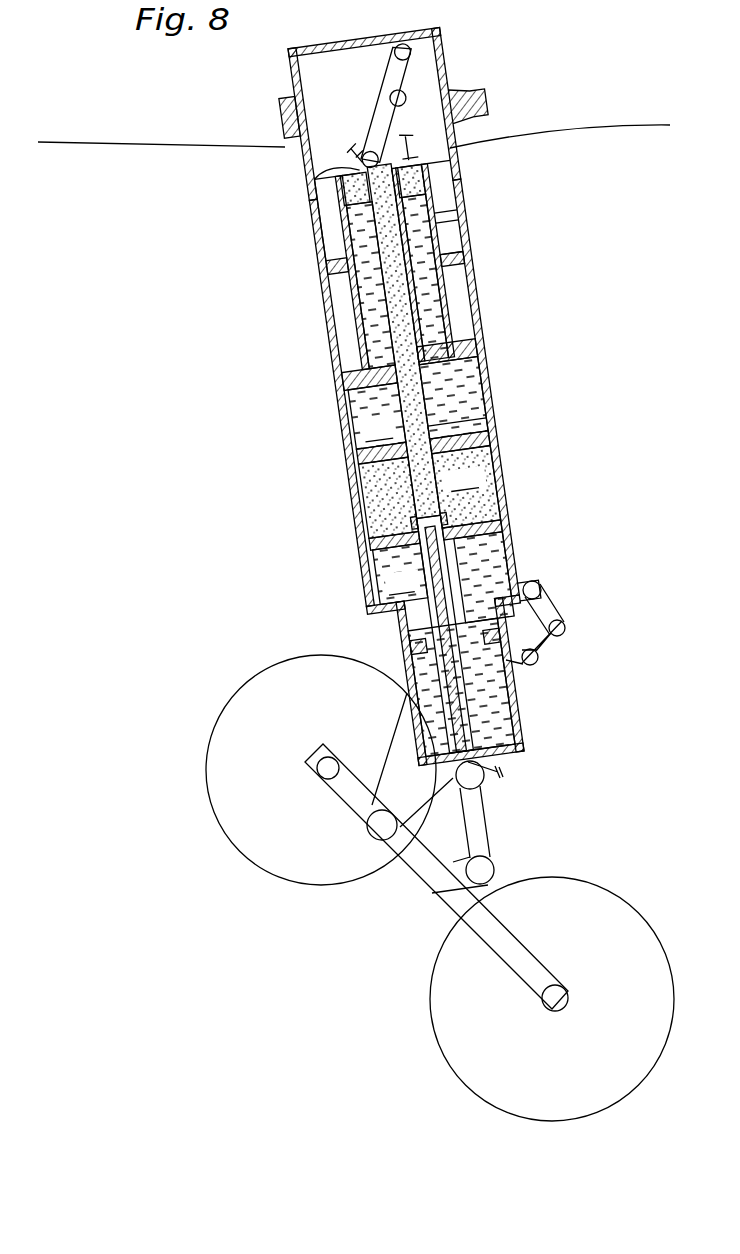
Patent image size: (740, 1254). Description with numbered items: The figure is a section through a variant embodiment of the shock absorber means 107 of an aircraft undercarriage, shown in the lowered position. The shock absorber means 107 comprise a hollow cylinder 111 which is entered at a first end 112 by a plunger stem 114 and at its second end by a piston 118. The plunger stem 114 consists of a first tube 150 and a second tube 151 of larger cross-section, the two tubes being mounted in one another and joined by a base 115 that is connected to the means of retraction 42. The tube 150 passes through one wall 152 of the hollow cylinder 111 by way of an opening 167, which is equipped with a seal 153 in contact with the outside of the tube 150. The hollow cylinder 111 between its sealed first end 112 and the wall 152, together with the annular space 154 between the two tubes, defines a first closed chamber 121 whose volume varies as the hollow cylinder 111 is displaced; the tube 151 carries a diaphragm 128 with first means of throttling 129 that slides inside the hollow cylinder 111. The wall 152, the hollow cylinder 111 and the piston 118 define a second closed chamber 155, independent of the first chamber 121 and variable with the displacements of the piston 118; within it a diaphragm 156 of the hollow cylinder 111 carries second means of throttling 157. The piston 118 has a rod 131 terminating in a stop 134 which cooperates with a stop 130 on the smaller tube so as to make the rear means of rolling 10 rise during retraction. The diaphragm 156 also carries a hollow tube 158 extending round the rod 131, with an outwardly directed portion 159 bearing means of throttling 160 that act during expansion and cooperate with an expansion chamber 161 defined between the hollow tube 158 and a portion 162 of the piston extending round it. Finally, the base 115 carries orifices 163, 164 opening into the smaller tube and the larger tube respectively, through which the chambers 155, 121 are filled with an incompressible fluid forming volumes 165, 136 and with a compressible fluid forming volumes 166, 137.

The rear means of rolling 10 is at (597, 898).
The means of retraction 42 is at (293, 143).
The shock absorber means 107 is at (338, 393).
The hollow cylinder 111 is at (330, 313).
The first end 112 is at (330, 260).
The plunger stem 114 is at (328, 227).
The base 115 is at (340, 186).
The piston 118 is at (498, 703).
The first closed chamber 121 is at (485, 357).
The diaphragm 128 is at (493, 345).
The first means of throttling 129 is at (355, 366).
The stop 130 is at (417, 505).
The rod 131 is at (417, 560).
The stop 134 is at (412, 488).
The volume 136 is at (377, 416).
The volume 137 is at (423, 187).
The first tube 150 is at (437, 272).
The second tube 151 is at (427, 213).
The wall 152 is at (473, 417).
The seal 153 is at (432, 420).
The annular space 154 is at (417, 230).
The second closed chamber 155 is at (500, 557).
The diaphragm 156 is at (505, 520).
The second means of throttling 157 is at (367, 548).
The hollow tube 158 is at (420, 603).
The portion 159 is at (485, 648).
The means of throttling 160 is at (413, 663).
The expansion chamber 161 is at (403, 648).
The portion 162 is at (505, 628).
The orifice 163 is at (363, 175).
The orifice 164 is at (427, 163).
The volume 165 is at (400, 582).
The volume 166 is at (466, 487).
The opening 167 is at (430, 410).